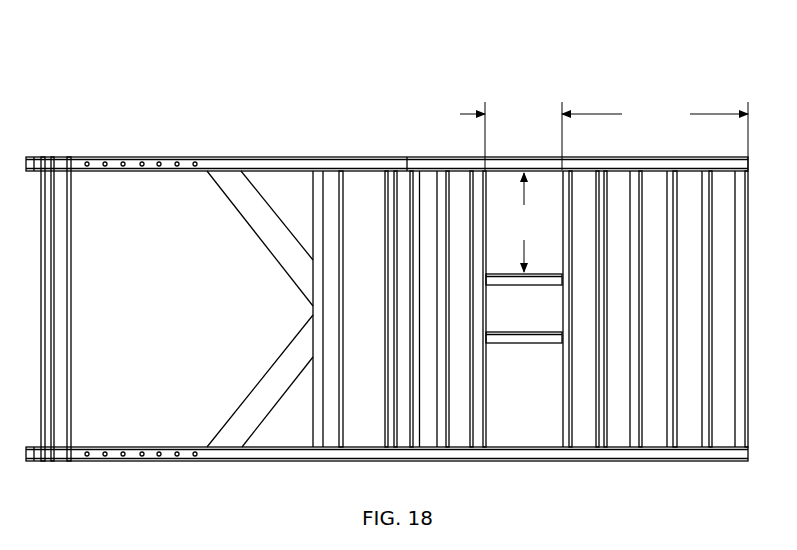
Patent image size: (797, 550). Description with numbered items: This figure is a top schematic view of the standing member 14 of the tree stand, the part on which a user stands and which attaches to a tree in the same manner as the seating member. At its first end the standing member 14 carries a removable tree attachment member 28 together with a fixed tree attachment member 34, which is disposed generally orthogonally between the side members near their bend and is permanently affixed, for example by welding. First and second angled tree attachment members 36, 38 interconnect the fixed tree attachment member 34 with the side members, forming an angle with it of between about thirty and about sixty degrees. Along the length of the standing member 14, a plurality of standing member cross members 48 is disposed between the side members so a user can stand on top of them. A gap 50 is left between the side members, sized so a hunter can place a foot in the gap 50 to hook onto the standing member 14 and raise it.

The standing member 14 is at (135, 93).
The removable tree attachment member 28 is at (62, 402).
The fixed tree attachment member 34 is at (328, 213).
The first angled tree attachment member 36 is at (267, 385).
The second angled tree attachment member 38 is at (287, 252).
The standing member cross members 48 is at (670, 430).
The gap 50 is at (502, 190).